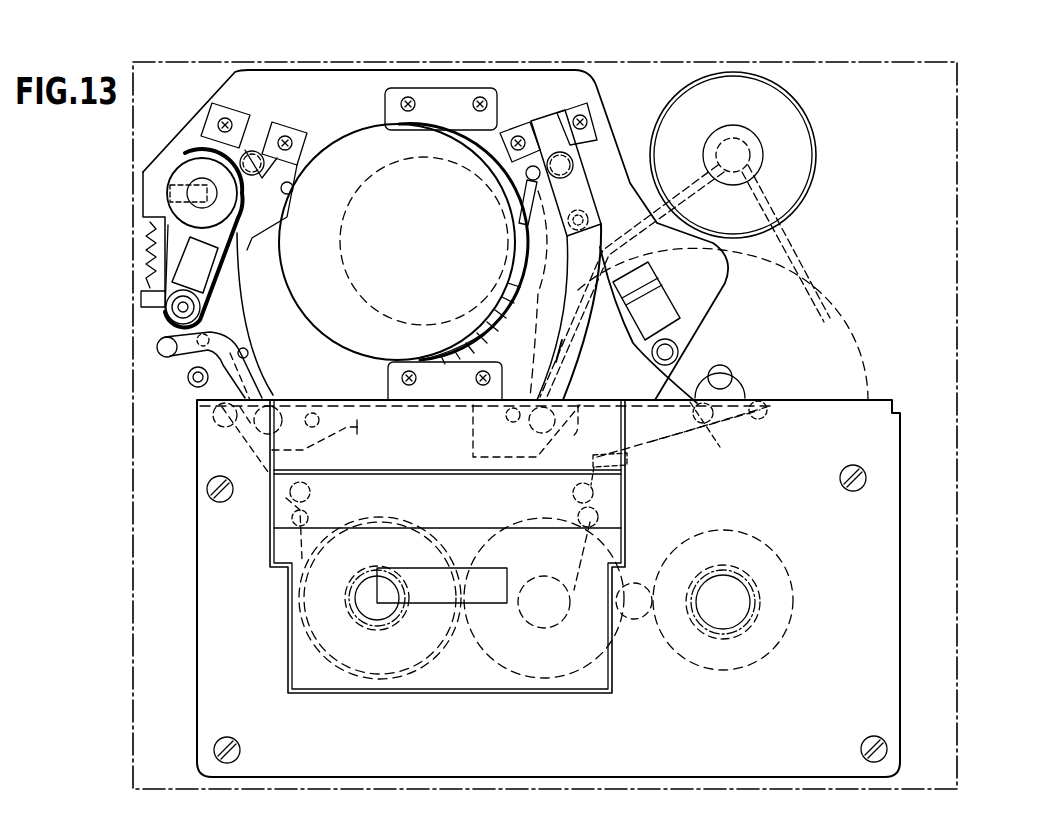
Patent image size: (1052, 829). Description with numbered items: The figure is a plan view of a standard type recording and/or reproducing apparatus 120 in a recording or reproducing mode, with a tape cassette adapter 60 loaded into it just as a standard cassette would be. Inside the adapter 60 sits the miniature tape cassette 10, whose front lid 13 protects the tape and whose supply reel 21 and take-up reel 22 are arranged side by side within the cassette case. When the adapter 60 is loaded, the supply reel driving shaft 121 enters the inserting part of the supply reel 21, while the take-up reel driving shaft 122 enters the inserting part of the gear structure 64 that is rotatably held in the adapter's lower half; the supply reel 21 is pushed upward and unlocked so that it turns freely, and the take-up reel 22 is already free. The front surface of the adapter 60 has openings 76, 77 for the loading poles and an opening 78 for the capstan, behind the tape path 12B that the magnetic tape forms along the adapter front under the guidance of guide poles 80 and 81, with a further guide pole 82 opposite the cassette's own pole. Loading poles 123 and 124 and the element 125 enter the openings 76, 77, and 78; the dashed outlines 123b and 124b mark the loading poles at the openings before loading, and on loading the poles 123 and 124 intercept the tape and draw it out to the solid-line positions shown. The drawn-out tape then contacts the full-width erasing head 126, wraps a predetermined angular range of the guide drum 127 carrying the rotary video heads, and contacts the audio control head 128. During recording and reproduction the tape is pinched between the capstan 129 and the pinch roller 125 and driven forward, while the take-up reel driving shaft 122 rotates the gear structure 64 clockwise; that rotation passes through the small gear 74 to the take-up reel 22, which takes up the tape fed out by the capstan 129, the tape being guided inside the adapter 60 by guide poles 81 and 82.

The standard type recording and/or reproducing apparatus 120 is at (996, 93).
The tape cassette adapter 60 is at (903, 575).
The tape cassette 10 is at (453, 683).
The supply reel 21 is at (337, 678).
The take-up reel 22 is at (535, 678).
The supply reel driving shaft 121 is at (360, 624).
The take-up reel driving shaft 122 is at (728, 628).
The gear structure 64 is at (790, 608).
The gear 74 is at (629, 621).
The opening for inserting loading pole 76 is at (330, 435).
The opening for inserting loading pole 77 is at (470, 431).
The opening for inserting the capstan 78 is at (720, 432).
The guide pole 80 is at (235, 439).
The guide pole 81 is at (768, 421).
The guide pole 82 is at (628, 461).
The loading pole 123 is at (237, 160).
The tape loading roller (unloaded position) 123b is at (280, 481).
The loading pole 124 is at (573, 165).
The pinch roller (unloaded position) 124b is at (535, 428).
The capstan / pinch roller 125 is at (700, 416).
The full-width erasing head 126 is at (185, 262).
The guide drum 127 is at (357, 133).
The audio control head 128 is at (648, 290).
The capstan 129 is at (720, 356).
The tape path 12B is at (427, 399).
The lid 13 is at (600, 409).